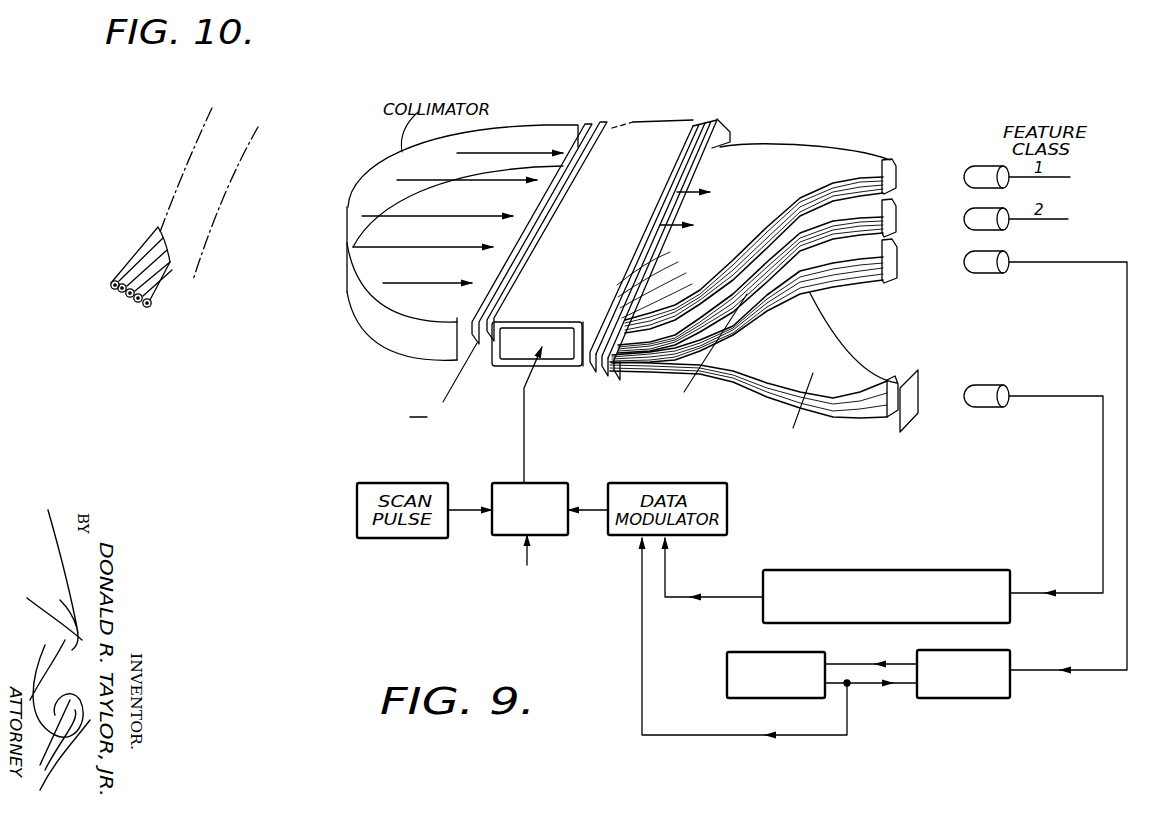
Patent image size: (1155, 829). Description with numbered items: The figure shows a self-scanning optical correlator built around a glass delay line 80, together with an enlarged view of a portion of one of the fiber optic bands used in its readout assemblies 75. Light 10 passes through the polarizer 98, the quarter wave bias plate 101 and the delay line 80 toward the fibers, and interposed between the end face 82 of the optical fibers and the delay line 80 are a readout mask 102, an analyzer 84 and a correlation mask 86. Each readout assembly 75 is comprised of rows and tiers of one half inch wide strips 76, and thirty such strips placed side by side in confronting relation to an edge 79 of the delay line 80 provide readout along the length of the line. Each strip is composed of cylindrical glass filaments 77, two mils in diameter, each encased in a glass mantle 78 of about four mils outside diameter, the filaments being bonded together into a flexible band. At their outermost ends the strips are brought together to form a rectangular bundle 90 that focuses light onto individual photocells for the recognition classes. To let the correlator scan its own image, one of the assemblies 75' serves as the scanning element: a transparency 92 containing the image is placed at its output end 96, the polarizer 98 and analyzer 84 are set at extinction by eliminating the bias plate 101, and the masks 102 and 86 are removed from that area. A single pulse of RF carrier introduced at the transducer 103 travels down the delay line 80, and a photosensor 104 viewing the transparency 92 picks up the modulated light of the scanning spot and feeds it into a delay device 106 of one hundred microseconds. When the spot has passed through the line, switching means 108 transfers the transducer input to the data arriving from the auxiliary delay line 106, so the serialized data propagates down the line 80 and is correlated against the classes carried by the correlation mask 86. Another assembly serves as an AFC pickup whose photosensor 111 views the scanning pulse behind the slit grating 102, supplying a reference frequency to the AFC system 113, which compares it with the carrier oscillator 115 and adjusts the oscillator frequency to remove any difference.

In FIG. 9, the light beam 10 is at (690, 203).
In FIG. 9, the readout assemblies 75 is at (882, 232).
In FIG. 9, the readout assembly used as scanner 75' is at (754, 375).
In FIG. 10, the strips 76 is at (133, 310).
In FIG. 9, the strips 76 is at (620, 308).
In FIG. 10, the cylindrical glass filaments 77 is at (114, 291).
In FIG. 10, the glass mantle 78 is at (163, 293).
In FIG. 9, the edge of the glass delay line 79 is at (584, 366).
In FIG. 9, the glass delay line 80 is at (633, 150).
In FIG. 9, the end face of the optical fibers 82 is at (670, 172).
In FIG. 9, the analyzer 84 is at (690, 143).
In FIG. 9, the correlation mask 86 is at (720, 147).
In FIG. 9, the rectangular bundle 90 is at (896, 228).
In FIG. 9, the transparency 92 is at (911, 413).
In FIG. 9, the output end of the scanning readout assembly 96 is at (902, 370).
In FIG. 9, the polarizer 98 is at (597, 127).
In FIG. 9, the quarter wave bias plate 101 is at (607, 128).
In FIG. 9, the readout mask 102 is at (698, 120).
In FIG. 9, the transducer 103 is at (552, 352).
In FIG. 9, the photosensor 104 is at (990, 385).
In FIG. 9, the delay device 106 is at (977, 568).
In FIG. 9, the switching means 108 is at (492, 535).
In FIG. 9, the photosensor 111 is at (988, 272).
In FIG. 9, the AFC system 113 is at (963, 698).
In FIG. 9, the carrier oscillator 115 is at (727, 695).